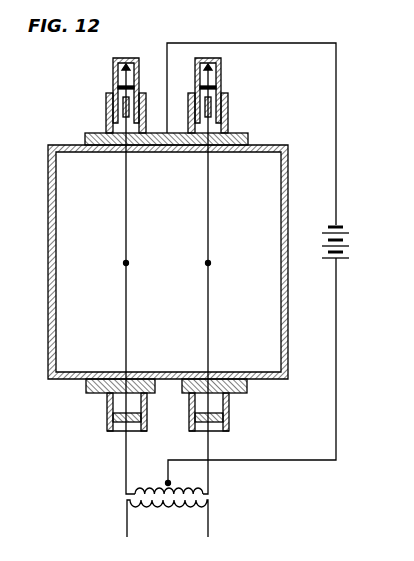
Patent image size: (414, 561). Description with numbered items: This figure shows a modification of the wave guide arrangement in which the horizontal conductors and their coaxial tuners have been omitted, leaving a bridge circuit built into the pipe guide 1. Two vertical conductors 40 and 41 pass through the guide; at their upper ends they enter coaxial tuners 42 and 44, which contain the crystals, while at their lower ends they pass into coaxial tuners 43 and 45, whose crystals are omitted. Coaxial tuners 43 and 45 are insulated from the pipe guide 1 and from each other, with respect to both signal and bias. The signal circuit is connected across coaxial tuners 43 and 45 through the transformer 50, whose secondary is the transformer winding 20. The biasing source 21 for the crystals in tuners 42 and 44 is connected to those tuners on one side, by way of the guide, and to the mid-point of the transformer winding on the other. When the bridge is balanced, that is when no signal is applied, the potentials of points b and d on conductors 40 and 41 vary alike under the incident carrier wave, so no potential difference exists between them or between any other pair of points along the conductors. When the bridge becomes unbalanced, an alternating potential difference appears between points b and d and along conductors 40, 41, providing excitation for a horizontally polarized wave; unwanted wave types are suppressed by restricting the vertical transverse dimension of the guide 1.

The pipe guide 1 is at (289, 173).
The transformer winding 20 is at (167, 518).
The biasing source 21 is at (348, 240).
The conductor 40 is at (127, 185).
The conductor 41 is at (209, 185).
The coaxial tuner 42 is at (105, 105).
The coaxial tuner 44 is at (228, 103).
The coaxial tuner 43 is at (106, 412).
The coaxial tuner 45 is at (230, 415).
The transformer 50 is at (206, 496).
The point b is at (135, 263).
The point d is at (217, 263).